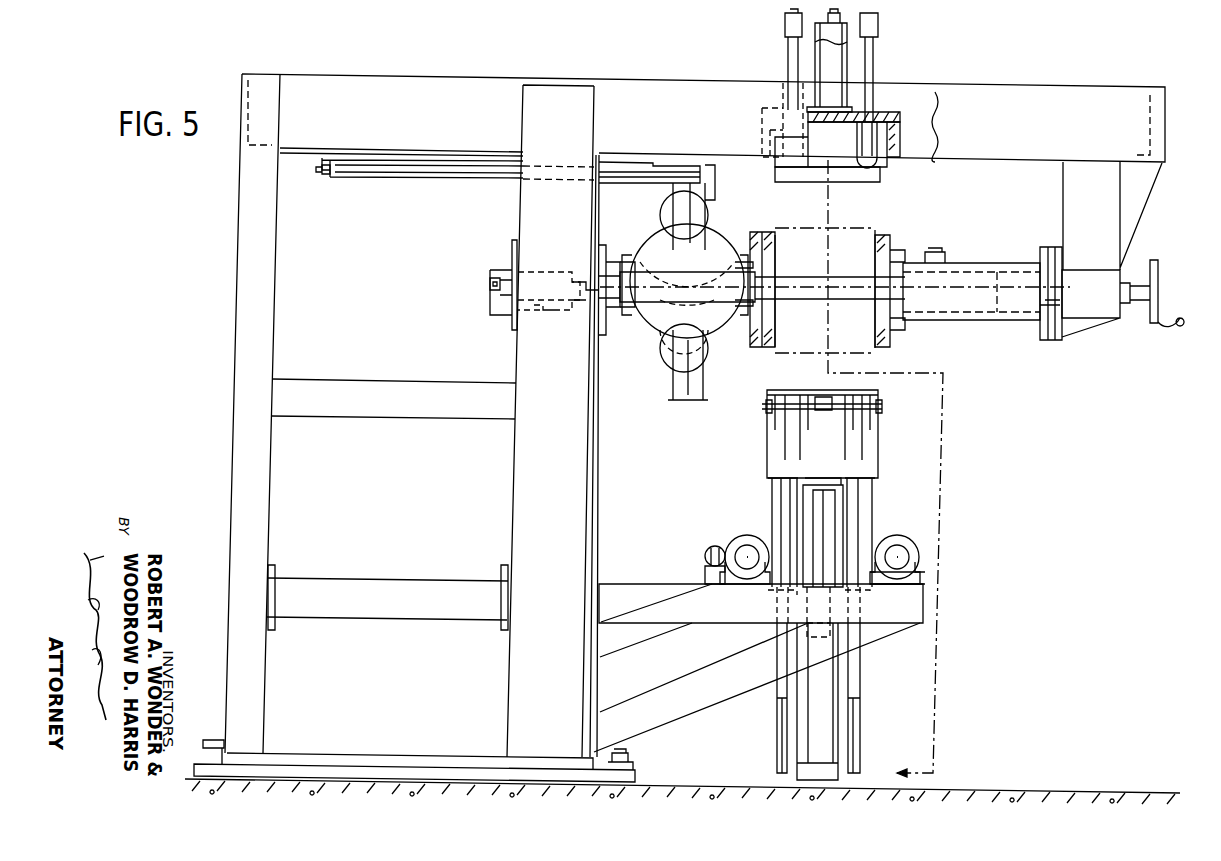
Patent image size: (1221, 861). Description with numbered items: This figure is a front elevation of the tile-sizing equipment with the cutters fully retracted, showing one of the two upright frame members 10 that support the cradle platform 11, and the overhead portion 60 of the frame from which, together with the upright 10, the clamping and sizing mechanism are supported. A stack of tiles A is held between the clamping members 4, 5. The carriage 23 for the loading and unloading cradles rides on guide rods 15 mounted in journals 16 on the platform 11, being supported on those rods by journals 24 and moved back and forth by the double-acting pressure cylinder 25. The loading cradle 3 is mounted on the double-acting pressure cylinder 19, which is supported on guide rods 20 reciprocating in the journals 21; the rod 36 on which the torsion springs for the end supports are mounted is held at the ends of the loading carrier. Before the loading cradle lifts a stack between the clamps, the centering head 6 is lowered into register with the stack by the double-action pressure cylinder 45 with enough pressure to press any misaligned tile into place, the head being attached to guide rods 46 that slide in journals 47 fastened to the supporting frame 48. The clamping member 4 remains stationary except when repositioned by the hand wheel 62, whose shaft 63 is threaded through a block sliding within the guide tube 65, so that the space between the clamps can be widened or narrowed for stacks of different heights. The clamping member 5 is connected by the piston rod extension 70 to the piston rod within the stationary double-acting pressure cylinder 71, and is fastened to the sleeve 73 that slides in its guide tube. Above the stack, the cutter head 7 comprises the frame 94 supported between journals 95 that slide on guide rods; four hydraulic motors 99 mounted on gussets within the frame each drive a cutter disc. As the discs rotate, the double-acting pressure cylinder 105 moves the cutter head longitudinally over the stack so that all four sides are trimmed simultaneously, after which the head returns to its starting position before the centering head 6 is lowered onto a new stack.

The loading cradle 3 is at (886, 450).
The clamping member 4 is at (900, 349).
The clamping member 5 is at (776, 222).
The centering head 6 is at (806, 30).
The cutter head 7 is at (656, 382).
The upright frame member 10 is at (512, 455).
The cradle platform 11 is at (915, 607).
The guide rods 15 is at (748, 560).
The journals 16 is at (915, 578).
The double-acting pressure cylinder 19 is at (824, 514).
The guide rods 20 is at (790, 690).
The journals 21 is at (772, 500).
The carriage 23 is at (915, 540).
The journals 24 is at (735, 540).
The double-acting pressure cylinder 25 is at (705, 558).
The rod 36 is at (885, 406).
The double-action pressure cylinder 45 is at (842, 68).
The guide rods 46 is at (872, 85).
The journals 47 is at (888, 142).
The supporting frame 48 is at (905, 116).
The overhead portion of the frame 60 is at (1075, 98).
The hand wheel 62 is at (1158, 266).
The shaft 63 is at (1036, 320).
The guide tube 65 is at (1000, 323).
The piston rod extension 70 is at (600, 265).
The double-acting pressure cylinder 71 is at (540, 270).
The sleeve 73 is at (960, 288).
The frame 94 is at (700, 205).
The journals 95 is at (636, 312).
The hydraulic motors 99 is at (672, 212).
The double-acting pressure cylinder 105 is at (432, 178).
The stack of tiles A is at (862, 228).